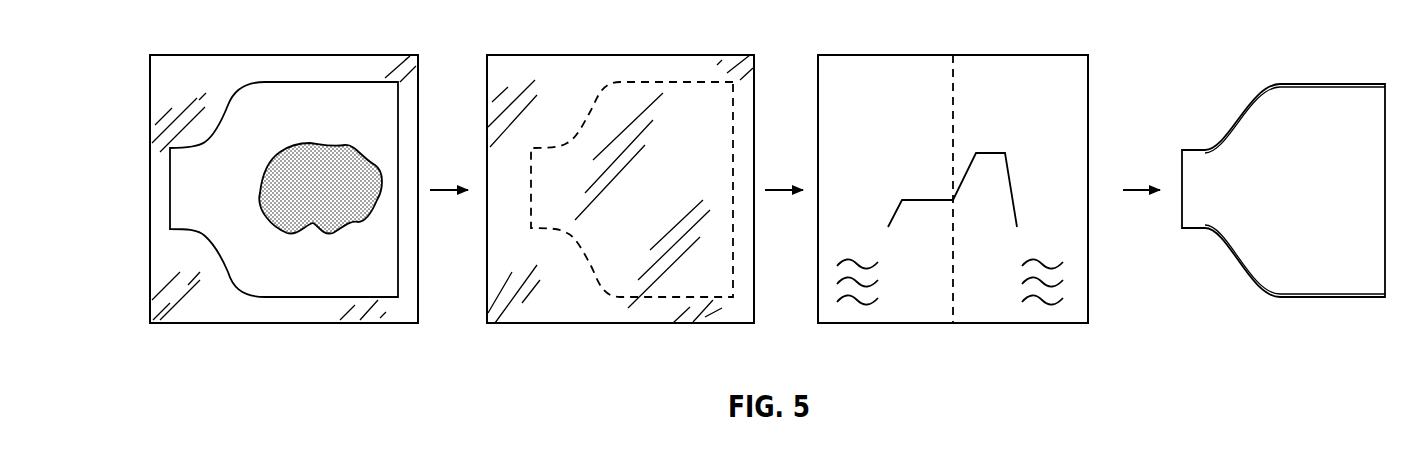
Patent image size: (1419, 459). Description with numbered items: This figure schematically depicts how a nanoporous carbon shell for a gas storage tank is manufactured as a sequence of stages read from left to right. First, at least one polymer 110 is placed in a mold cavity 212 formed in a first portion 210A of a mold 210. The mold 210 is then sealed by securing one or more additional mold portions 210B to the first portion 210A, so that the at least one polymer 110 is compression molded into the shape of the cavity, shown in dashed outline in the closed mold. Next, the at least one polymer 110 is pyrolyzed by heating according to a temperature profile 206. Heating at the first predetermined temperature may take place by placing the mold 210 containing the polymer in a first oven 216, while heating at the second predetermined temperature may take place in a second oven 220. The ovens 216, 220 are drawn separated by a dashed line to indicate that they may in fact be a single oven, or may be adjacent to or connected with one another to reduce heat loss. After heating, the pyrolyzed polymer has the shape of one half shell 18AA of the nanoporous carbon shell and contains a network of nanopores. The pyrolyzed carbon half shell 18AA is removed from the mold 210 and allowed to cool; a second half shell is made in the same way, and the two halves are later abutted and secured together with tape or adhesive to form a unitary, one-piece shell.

The mold 210 is at (418, 202).
The first portion of the mold 210A is at (250, 202).
The additional mold portion 210B is at (527, 303).
The mold cavity 212 is at (314, 100).
The at least one polymer 110 is at (315, 222).
The first oven 216 is at (857, 72).
The second oven 220 is at (1025, 77).
The temperature profile 206 is at (938, 181).
The half shell 18AA is at (1234, 257).